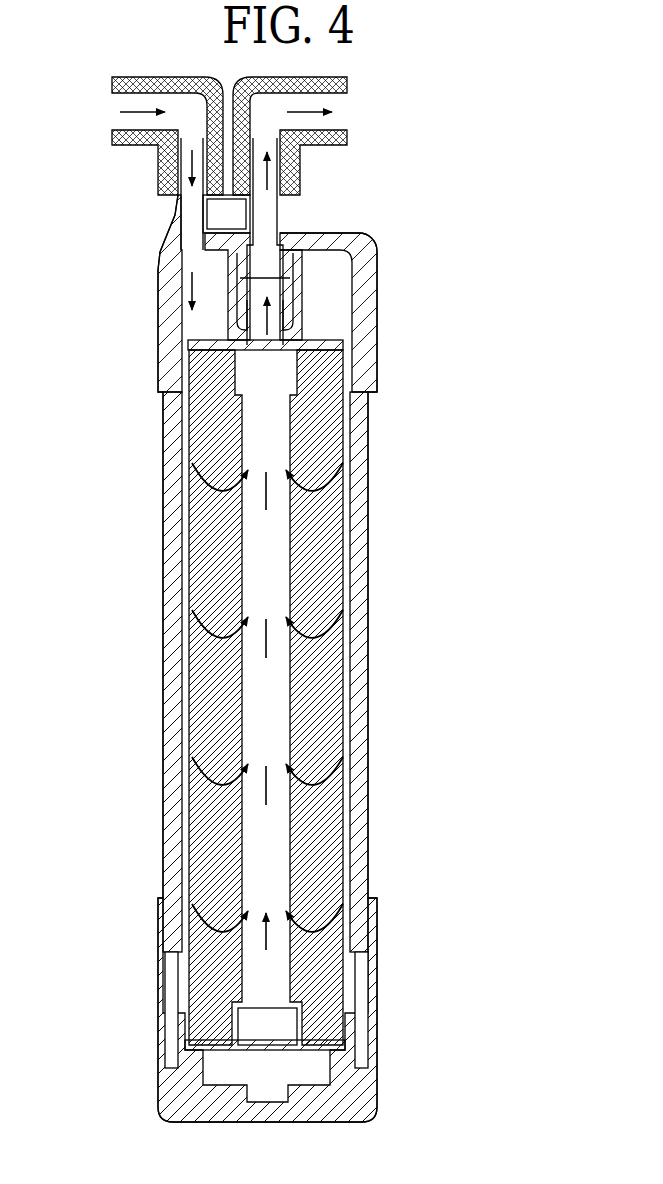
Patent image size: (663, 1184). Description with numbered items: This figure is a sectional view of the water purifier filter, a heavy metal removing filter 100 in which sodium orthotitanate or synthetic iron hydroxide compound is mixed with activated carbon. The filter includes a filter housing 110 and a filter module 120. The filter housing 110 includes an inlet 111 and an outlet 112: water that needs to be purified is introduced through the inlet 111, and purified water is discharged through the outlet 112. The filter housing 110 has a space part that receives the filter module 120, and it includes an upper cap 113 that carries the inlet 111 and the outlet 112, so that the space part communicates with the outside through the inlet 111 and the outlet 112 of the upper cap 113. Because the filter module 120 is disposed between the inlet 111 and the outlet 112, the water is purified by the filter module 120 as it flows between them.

The heavy metal removing filter 100 is at (378, 224).
The filter housing 110 is at (362, 582).
The inlet 111 is at (112, 107).
The outlet 112 is at (350, 105).
The upper cap 113 is at (378, 288).
The filter module 120 is at (310, 694).